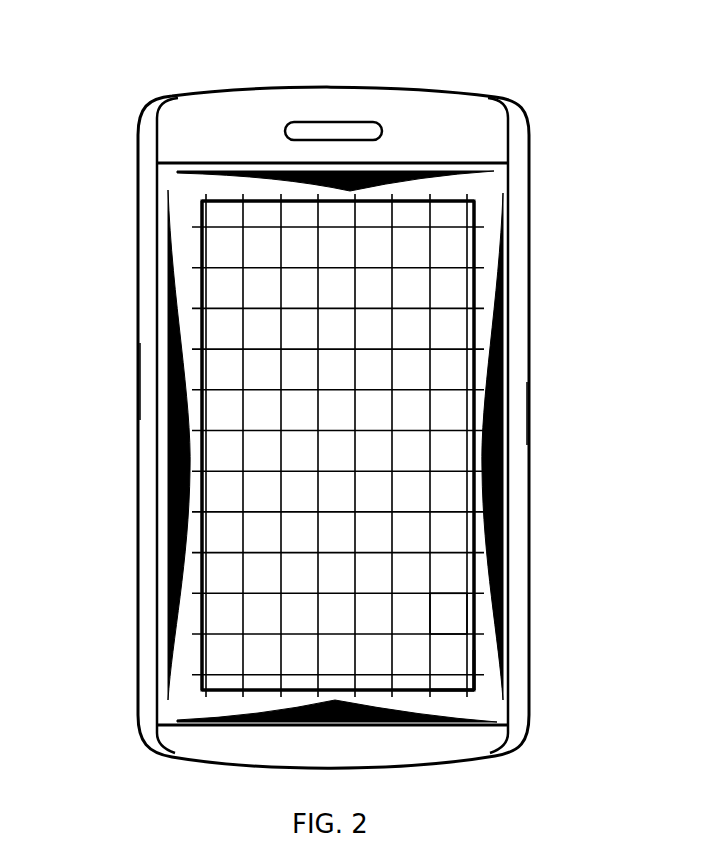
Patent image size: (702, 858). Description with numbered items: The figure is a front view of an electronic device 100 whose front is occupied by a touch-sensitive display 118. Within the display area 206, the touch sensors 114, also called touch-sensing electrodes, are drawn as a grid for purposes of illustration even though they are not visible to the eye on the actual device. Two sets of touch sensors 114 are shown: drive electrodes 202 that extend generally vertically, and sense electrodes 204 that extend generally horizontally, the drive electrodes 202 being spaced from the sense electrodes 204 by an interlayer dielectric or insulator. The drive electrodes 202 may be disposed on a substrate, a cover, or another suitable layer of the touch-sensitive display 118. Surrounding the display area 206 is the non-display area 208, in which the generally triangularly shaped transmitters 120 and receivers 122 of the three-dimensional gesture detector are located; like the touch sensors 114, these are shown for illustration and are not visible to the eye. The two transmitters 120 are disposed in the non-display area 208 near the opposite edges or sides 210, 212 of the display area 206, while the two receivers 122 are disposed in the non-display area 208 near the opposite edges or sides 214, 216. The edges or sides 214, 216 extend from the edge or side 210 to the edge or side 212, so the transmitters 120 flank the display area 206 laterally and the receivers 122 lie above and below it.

The electronic device 100 is at (184, 793).
The touch sensors 114 is at (467, 277).
The touch-sensitive display 118 is at (457, 612).
The transmitters 120 is at (507, 452).
The receivers 122 is at (406, 168).
The drive electrodes 202 is at (432, 260).
The sense electrodes 204 is at (455, 348).
The display area 206 is at (457, 687).
The non-display area 208 is at (481, 688).
The edge or side of the display area 210 is at (202, 660).
The edge or side of the display area 212 is at (475, 650).
The edge or side of the display area 214 is at (442, 692).
The edge or side of the display area 216 is at (223, 202).